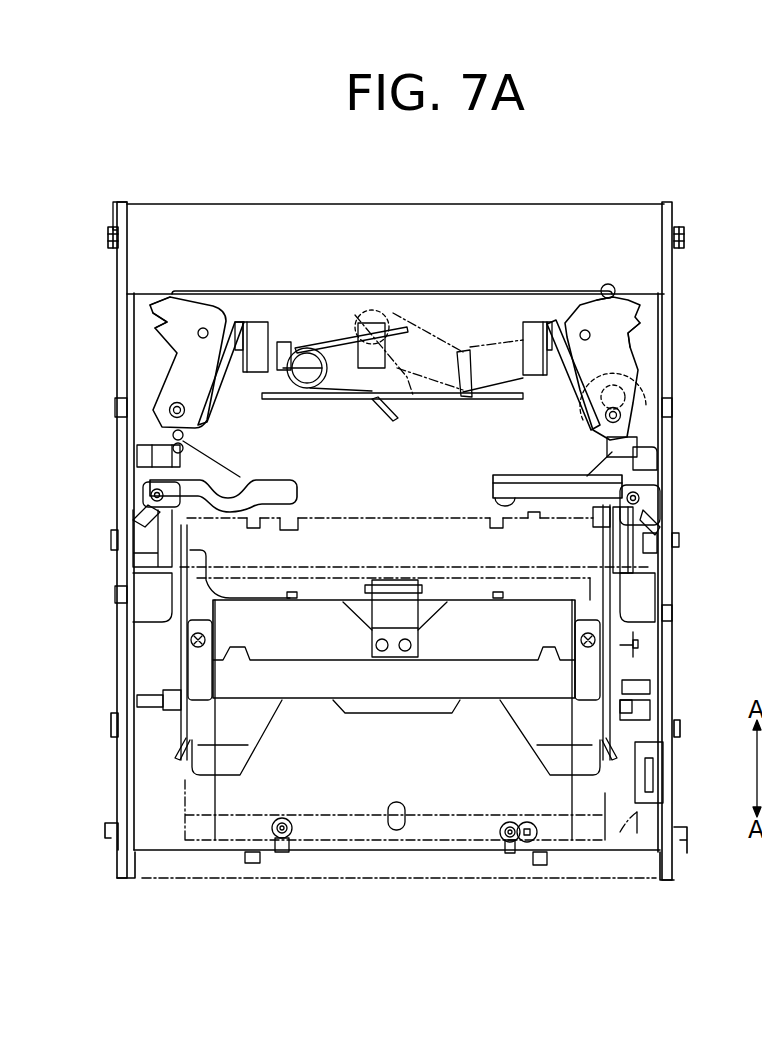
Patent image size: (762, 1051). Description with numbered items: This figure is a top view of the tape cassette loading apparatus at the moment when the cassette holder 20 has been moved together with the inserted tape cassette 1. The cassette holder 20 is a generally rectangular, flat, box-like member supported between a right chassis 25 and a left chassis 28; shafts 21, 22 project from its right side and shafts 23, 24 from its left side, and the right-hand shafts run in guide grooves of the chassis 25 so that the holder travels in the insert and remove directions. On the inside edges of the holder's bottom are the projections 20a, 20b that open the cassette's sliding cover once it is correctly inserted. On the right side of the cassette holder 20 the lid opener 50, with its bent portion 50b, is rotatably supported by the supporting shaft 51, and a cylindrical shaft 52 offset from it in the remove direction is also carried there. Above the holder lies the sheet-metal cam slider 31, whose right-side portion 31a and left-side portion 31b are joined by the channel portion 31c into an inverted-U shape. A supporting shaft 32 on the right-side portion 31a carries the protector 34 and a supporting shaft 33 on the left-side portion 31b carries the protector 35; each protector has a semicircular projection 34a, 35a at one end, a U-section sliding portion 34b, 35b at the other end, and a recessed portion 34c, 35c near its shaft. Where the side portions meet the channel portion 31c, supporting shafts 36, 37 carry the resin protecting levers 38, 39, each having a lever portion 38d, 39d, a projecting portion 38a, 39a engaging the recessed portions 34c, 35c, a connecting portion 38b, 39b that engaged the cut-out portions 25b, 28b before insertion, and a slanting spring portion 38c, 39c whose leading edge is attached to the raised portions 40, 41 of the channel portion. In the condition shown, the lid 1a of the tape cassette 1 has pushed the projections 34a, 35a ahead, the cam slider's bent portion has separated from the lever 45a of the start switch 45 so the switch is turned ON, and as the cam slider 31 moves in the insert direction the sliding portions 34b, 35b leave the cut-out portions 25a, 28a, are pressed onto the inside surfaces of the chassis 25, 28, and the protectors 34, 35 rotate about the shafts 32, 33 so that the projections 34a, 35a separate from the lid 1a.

The tape cassette 1 is at (630, 822).
The lid 1a is at (385, 518).
The cassette holder 20 is at (338, 615).
The projection 20a is at (498, 592).
The projection 20b is at (292, 592).
The shaft 21 is at (650, 706).
The shaft 22 is at (672, 548).
The shaft 23 is at (147, 677).
The shaft 24 is at (114, 560).
The chassis 25 is at (665, 282).
The cut-out portion 25a is at (675, 612).
The cut-out portion 25b is at (675, 407).
The chassis 28 is at (117, 264).
The cut-out portion 28a is at (121, 596).
The cut-out portion 28b is at (122, 408).
The cam slider 31 is at (372, 290).
The right-side portion 31a is at (645, 600).
The left-side portion 31b is at (138, 612).
The channel portion 31c is at (405, 398).
The supporting shaft 32 is at (650, 498).
The supporting shaft 33 is at (143, 497).
The protector 34 is at (509, 475).
The semicircular projection 34a is at (495, 500).
The sliding portion 34b is at (662, 523).
The recessed portion 34c is at (652, 462).
The protector 35 is at (270, 477).
The semicircular projection 35a is at (270, 527).
The sliding portion 35b is at (133, 518).
The recessed portion 35c is at (145, 460).
The supporting shaft 36 is at (620, 420).
The supporting shaft 37 is at (172, 416).
The protecting lever 38 is at (632, 375).
The projecting portion 38a is at (612, 447).
The connecting portion 38b is at (640, 308).
The spring portion 38c is at (558, 382).
The lever portion 38d is at (640, 342).
The protecting lever 39 is at (158, 377).
The projecting portion 39a is at (190, 440).
The connecting portion 39b is at (150, 308).
The spring portion 39c is at (238, 372).
The lever portion 39d is at (165, 345).
The raised portion 40 is at (528, 345).
The raised portion 41 is at (262, 322).
The start switch 45 is at (655, 795).
The lever 45a is at (658, 773).
The lid opener 50 is at (605, 571).
The bent portion 50b is at (598, 515).
The supporting shaft 51 is at (638, 643).
The cylindrical shaft 52 is at (652, 687).